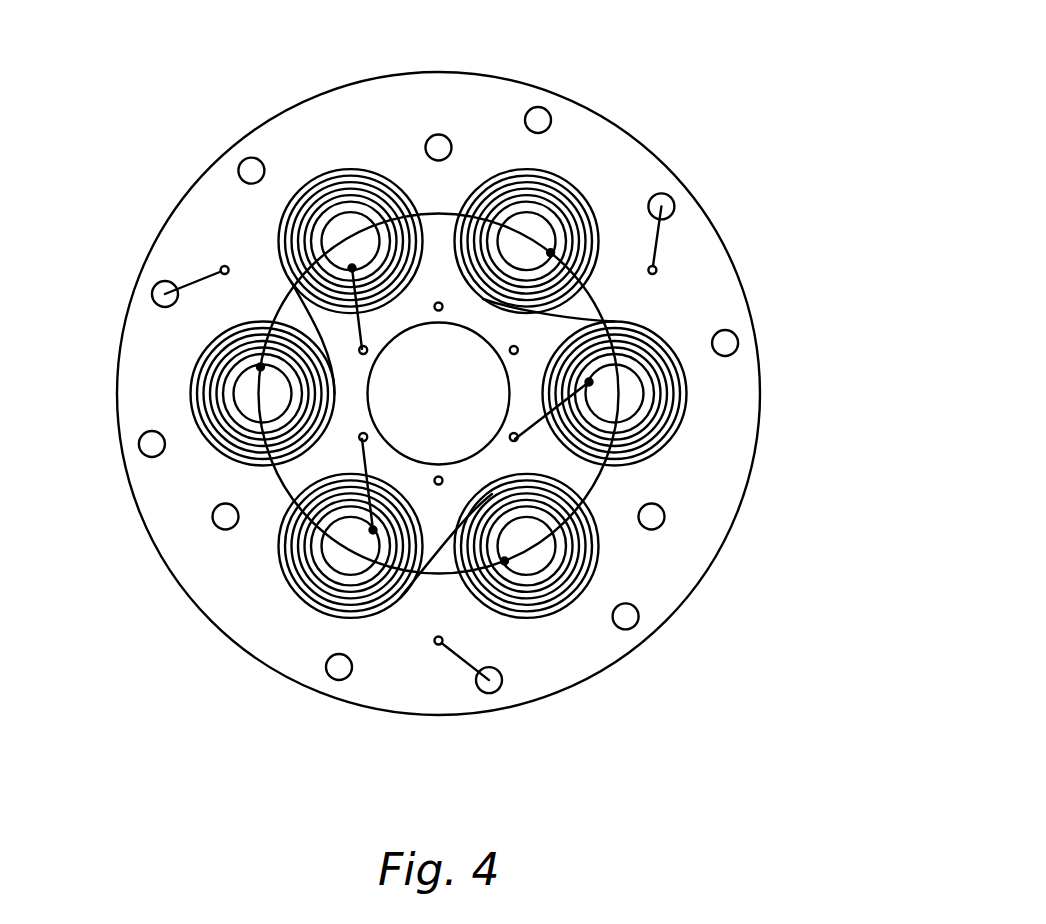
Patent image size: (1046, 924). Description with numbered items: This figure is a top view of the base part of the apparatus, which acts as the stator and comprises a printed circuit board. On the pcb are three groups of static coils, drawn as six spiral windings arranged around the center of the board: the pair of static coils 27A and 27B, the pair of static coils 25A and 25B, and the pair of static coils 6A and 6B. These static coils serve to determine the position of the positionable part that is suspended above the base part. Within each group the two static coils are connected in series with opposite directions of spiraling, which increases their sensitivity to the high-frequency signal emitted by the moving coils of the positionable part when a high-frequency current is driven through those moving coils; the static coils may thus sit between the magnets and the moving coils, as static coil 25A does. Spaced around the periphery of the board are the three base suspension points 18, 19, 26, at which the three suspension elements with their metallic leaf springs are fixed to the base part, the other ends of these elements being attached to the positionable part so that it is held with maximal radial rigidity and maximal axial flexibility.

The static coil 6A is at (193, 382).
The static coil 6B is at (340, 195).
The static coil 25A is at (557, 597).
The static coil 25B is at (313, 588).
The static coil 27A is at (557, 197).
The static coil 27B is at (667, 413).
The base suspension point 18 is at (667, 204).
The base suspension point 19 is at (488, 693).
The base suspension point 26 is at (160, 290).